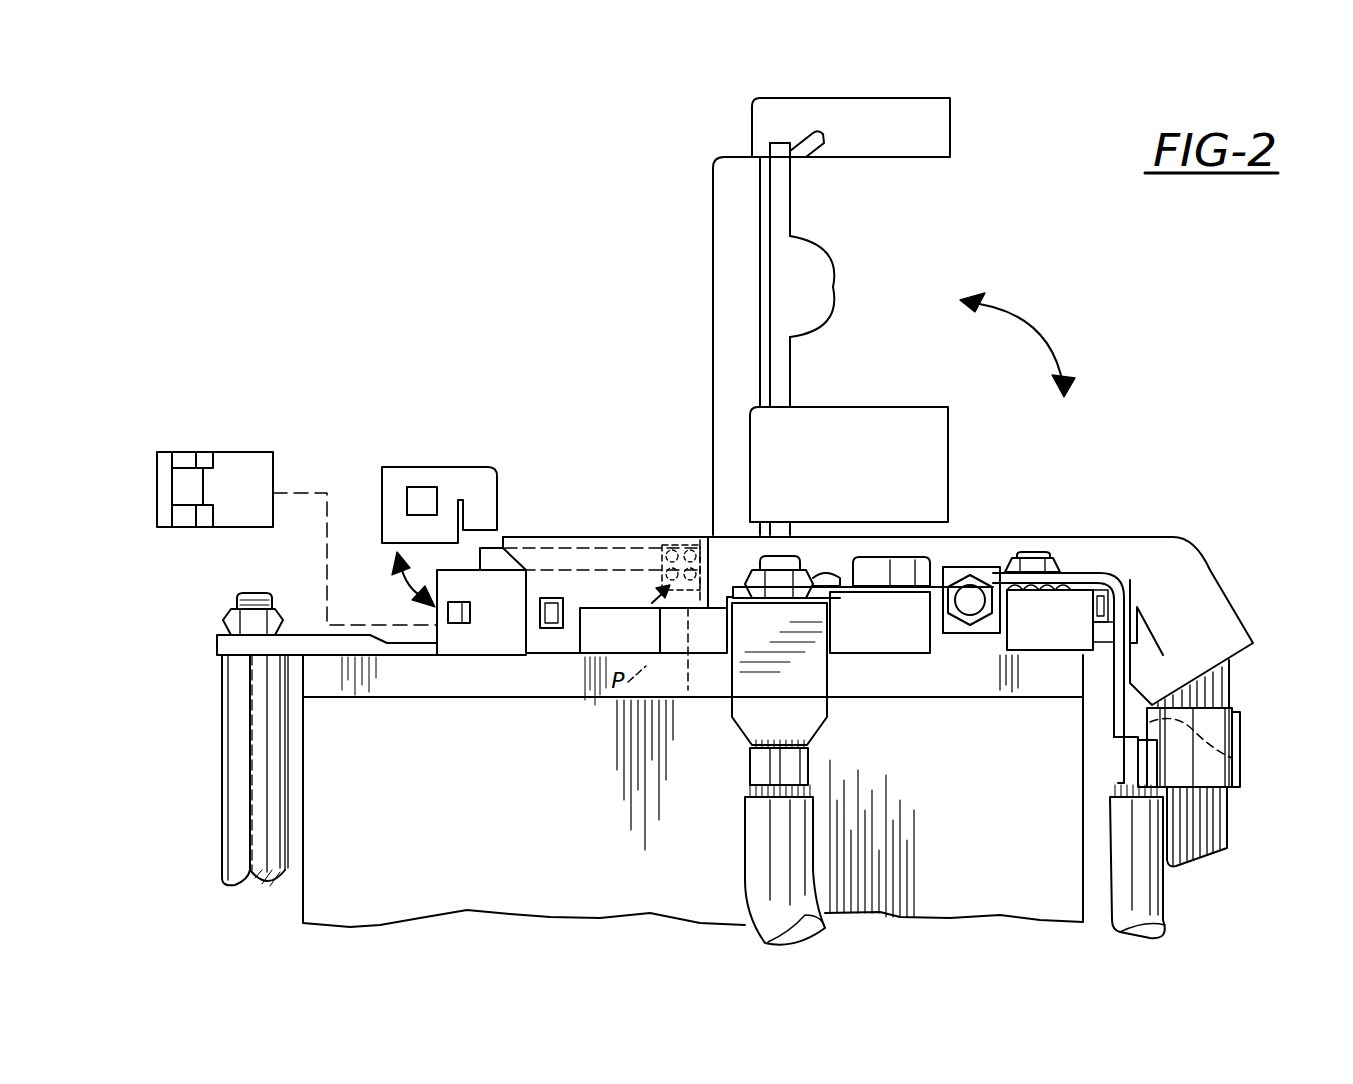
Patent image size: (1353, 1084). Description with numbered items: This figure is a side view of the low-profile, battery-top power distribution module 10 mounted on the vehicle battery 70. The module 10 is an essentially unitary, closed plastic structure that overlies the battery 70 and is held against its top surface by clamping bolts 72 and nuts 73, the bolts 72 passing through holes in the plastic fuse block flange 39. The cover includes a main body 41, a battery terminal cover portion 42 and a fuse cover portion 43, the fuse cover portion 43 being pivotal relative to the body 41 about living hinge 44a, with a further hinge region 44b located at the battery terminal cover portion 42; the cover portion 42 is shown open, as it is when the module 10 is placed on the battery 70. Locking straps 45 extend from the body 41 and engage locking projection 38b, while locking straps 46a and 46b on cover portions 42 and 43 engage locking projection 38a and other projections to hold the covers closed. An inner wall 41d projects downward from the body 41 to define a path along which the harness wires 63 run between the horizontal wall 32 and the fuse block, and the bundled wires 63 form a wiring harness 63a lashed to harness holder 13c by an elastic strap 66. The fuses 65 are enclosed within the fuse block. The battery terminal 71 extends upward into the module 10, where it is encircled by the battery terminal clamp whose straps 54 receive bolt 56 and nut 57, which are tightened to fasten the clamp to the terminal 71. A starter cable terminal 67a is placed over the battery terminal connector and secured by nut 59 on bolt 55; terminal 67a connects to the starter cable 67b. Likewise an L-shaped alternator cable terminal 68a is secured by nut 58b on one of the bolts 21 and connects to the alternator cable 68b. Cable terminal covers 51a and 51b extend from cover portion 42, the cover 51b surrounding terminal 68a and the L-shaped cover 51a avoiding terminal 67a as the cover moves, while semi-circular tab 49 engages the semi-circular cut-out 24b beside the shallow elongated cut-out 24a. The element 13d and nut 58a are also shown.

The power distribution module 10 is at (545, 320).
The harness holder 13c is at (1236, 753).
The cable strands 13d is at (1177, 653).
The bolts 21 is at (825, 562).
The shallow elongated cut-out 24a is at (822, 606).
The semi-circular cut-out 24b is at (1030, 640).
The horizontal wall 32 is at (668, 637).
The locking projection 38a is at (453, 645).
The locking projection 38b is at (548, 645).
The fuse block flange 39 is at (222, 640).
The main body 41 is at (573, 537).
The inner wall 41d is at (700, 537).
The battery terminal cover portion 42 is at (713, 247).
The fuse cover portion 43 is at (497, 478).
The living hinge 44a is at (505, 537).
The rail end 44b is at (705, 537).
The locking straps 45 is at (580, 660).
The locking strap 46a is at (830, 142).
The locking strap 46b is at (403, 475).
The semi-circular tab 49 is at (826, 274).
The cable terminal cover 51a is at (940, 440).
The cable terminal cover 51b is at (945, 120).
The straps 54 is at (968, 560).
The bolt 55 is at (782, 560).
The bolt 56 is at (946, 608).
The nut 57 is at (975, 612).
The washer 58a is at (830, 570).
The nut 58b is at (1058, 565).
The nut 59 is at (770, 603).
The wires 63 is at (660, 545).
The wiring harness 63a is at (1226, 820).
The fuses 65 is at (192, 462).
The elastic strap 66 is at (1227, 740).
The starter cable terminal 67a is at (808, 717).
The starter cable 67b is at (755, 858).
The alternator cable terminal 68a is at (1110, 540).
The alternator cable 68b is at (1120, 870).
The vehicle battery 70 is at (378, 857).
The battery terminal 71 is at (880, 565).
The clamping bolts 72 is at (233, 823).
The nuts 73 is at (230, 622).